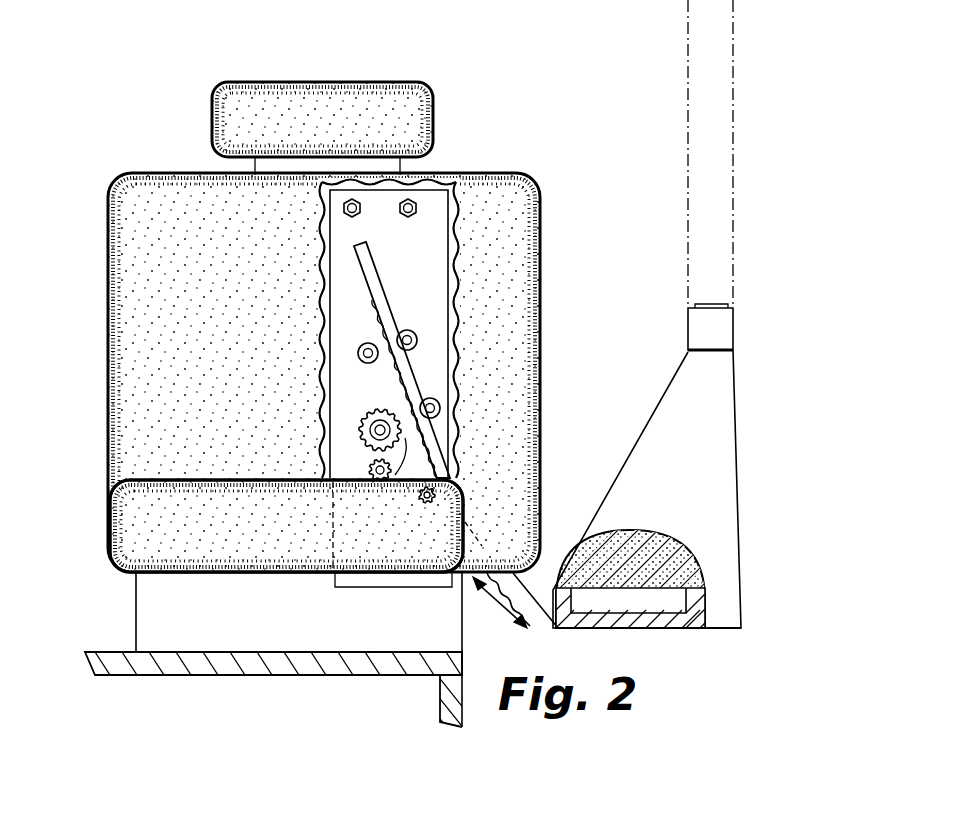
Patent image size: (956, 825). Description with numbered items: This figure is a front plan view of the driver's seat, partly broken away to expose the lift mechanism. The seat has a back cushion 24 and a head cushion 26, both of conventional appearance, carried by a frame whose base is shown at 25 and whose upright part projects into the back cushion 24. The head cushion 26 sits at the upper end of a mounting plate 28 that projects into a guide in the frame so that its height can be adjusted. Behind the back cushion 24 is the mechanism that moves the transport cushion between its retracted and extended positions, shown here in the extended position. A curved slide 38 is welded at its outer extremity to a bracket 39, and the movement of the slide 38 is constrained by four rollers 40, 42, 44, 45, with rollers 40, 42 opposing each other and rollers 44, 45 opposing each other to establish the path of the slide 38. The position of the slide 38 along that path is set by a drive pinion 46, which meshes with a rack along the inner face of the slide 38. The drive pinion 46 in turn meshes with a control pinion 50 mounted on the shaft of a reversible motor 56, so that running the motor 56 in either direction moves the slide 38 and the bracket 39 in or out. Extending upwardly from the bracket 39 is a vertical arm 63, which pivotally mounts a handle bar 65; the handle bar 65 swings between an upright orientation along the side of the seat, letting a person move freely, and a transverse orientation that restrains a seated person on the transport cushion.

The back cushion 24 is at (104, 288).
The frame base 25 is at (232, 652).
The head cushion 26 is at (392, 80).
The mounting plate 28 is at (400, 165).
The curved slide 38 is at (364, 258).
The bracket 39 is at (622, 490).
The roller 40 is at (417, 345).
The roller 42 is at (357, 360).
The roller 44 is at (428, 398).
The roller 45 is at (424, 503).
The drive pinion 46 is at (364, 418).
The control pinion 50 is at (368, 470).
The reversible motor 56 is at (364, 476).
The vertical arm 63 is at (688, 472).
The handle bar 65 is at (704, 101).